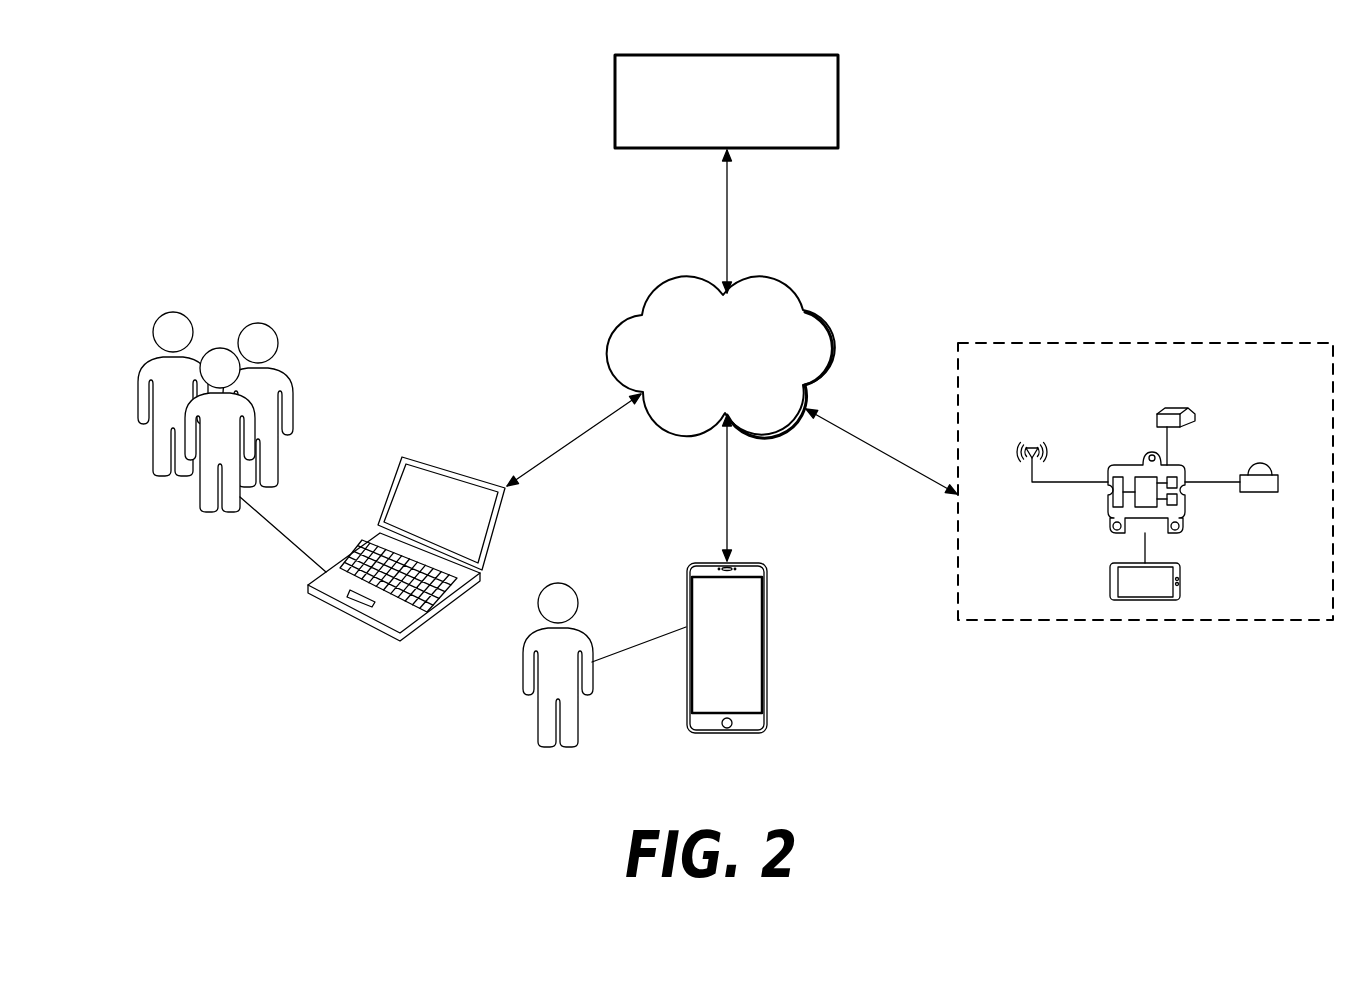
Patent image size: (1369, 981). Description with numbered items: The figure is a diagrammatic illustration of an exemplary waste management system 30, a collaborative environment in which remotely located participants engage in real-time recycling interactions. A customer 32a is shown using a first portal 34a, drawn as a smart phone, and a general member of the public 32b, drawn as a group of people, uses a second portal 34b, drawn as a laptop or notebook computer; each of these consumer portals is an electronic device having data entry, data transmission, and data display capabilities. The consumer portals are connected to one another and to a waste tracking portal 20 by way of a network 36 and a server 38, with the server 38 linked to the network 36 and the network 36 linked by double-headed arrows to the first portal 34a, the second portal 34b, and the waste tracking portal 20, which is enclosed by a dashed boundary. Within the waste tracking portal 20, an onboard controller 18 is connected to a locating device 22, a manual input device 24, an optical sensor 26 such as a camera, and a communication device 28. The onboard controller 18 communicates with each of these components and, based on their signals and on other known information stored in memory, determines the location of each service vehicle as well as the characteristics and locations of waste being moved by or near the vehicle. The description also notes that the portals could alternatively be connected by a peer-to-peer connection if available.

The onboard controller 18 is at (1123, 465).
The waste tracking portal 20 is at (1235, 622).
The locating device 22 is at (1275, 473).
The manual input device 24 is at (1110, 583).
The optical sensor 26 is at (1198, 412).
The communication device 28 is at (1033, 447).
The waste management system 30 is at (949, 239).
The customer 32a is at (582, 600).
The general member of the public 32b is at (277, 333).
The first portal 34a is at (763, 629).
The second portal 34b is at (430, 545).
The network 36 is at (739, 383).
The server 38 is at (737, 126).